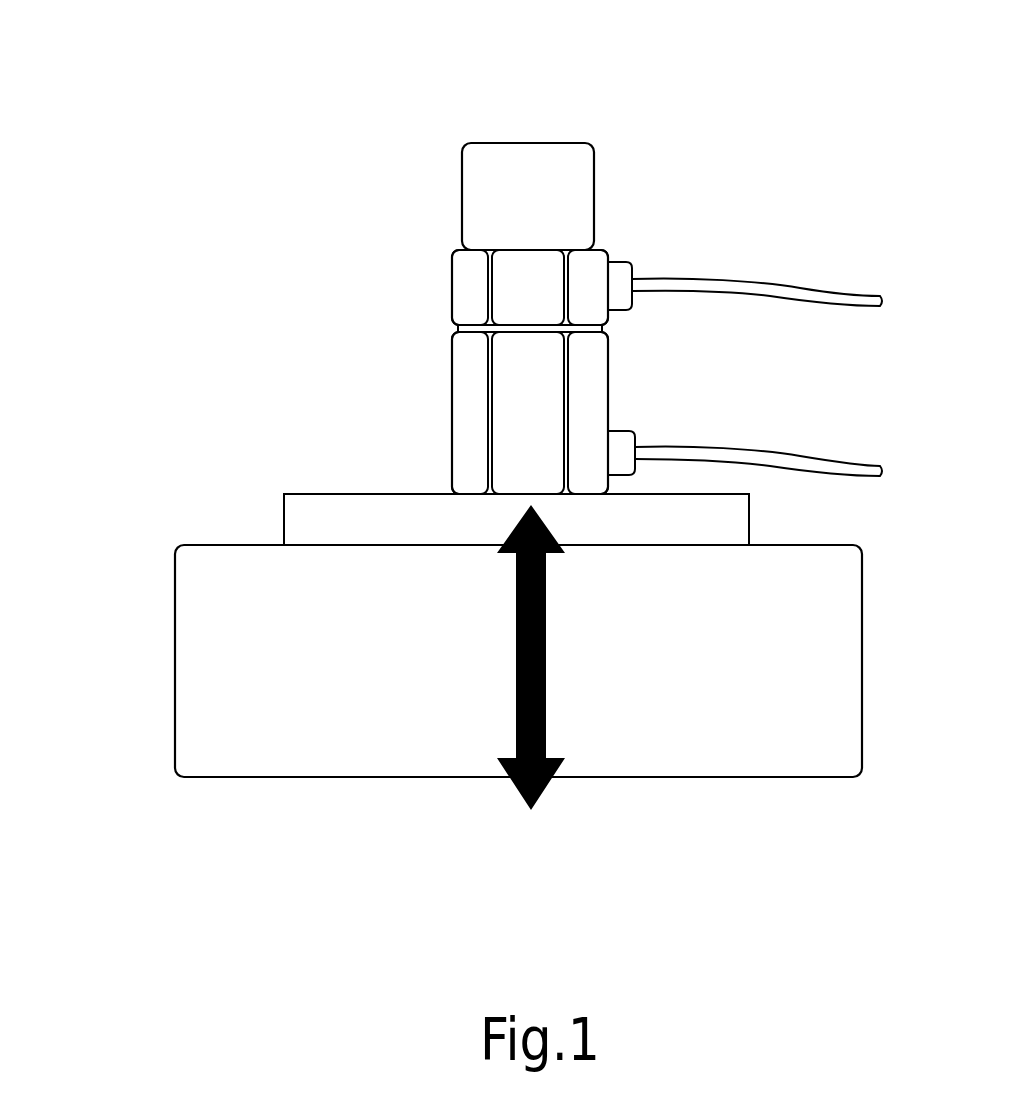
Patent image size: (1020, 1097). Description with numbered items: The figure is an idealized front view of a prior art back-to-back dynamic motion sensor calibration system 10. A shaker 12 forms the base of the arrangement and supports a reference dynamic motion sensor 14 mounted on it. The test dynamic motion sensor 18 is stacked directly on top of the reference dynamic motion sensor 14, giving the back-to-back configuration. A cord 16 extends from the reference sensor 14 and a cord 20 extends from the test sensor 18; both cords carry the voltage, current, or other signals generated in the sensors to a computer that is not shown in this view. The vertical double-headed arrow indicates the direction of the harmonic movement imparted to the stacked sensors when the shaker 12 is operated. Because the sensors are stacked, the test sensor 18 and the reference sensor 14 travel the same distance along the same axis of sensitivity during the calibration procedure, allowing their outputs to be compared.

The dynamic motion sensor calibration system 10 is at (248, 259).
The shaker 12 is at (175, 650).
The reference dynamic motion sensor 14 is at (453, 412).
The cord 16 is at (795, 458).
The test dynamic motion sensor 18 is at (595, 173).
The cord 20 is at (795, 285).